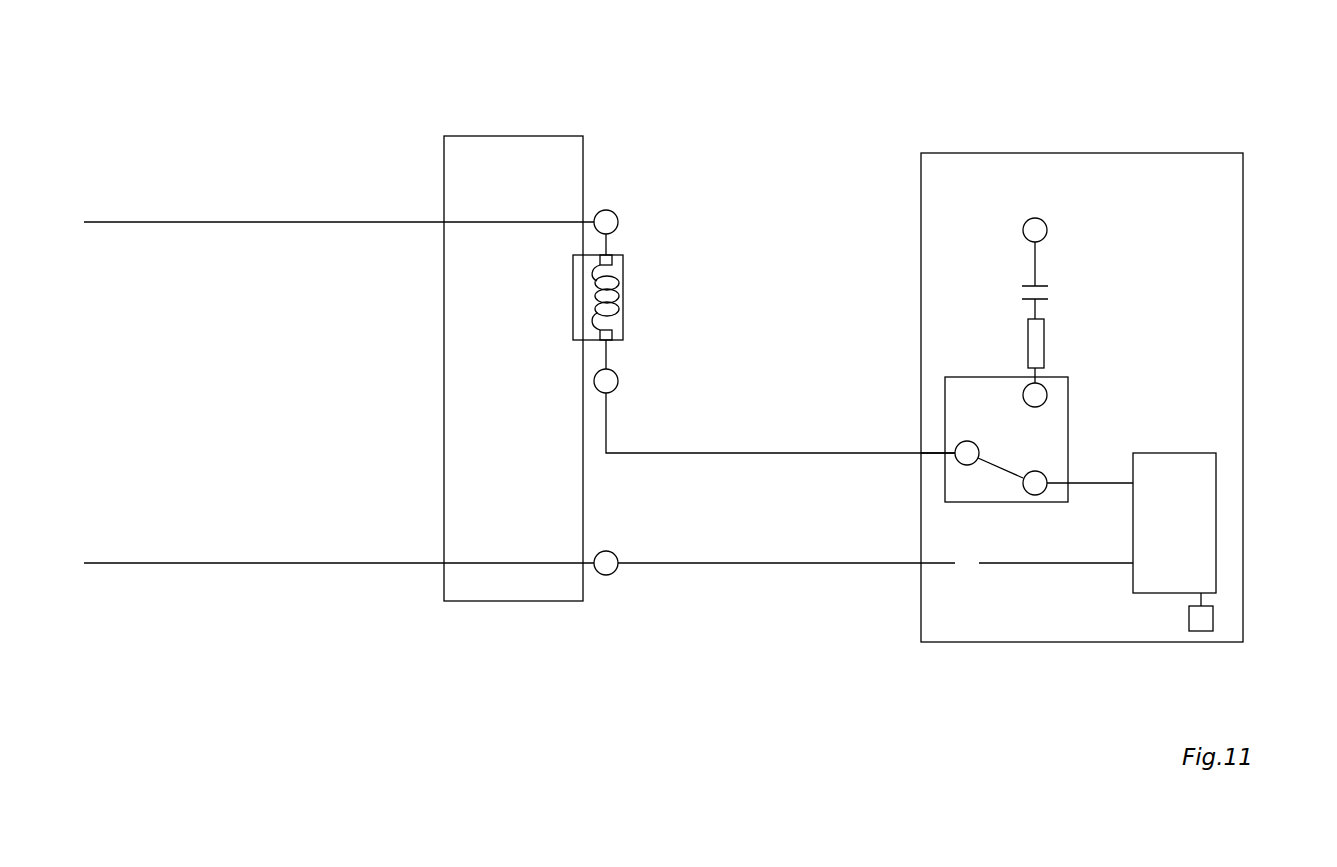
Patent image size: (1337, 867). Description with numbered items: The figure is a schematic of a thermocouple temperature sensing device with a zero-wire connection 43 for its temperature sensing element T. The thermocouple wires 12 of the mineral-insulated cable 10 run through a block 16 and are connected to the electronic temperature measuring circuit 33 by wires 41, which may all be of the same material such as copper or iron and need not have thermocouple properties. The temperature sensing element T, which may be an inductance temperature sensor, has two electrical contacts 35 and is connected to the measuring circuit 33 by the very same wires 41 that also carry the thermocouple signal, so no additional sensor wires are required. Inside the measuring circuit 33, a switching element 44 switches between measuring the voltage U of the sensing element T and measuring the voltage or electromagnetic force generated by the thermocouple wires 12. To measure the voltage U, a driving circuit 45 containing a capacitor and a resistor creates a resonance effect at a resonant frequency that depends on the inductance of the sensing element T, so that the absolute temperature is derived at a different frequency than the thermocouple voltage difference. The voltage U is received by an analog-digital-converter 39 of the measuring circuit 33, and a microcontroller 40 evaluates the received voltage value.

The mineral-insulated cable 10 is at (339, 134).
The thermocouple wires 12 is at (335, 222).
The switching unit 16 is at (524, 136).
The electronic temperature measuring circuit 33 is at (1128, 152).
The electrical contacts 35 is at (600, 260).
The temperature sensing element T is at (591, 301).
The analog-digital-converter 39 is at (1182, 453).
The microcontroller 40 is at (1201, 632).
The wires 41 is at (817, 453).
The zero-wire connection 43 is at (762, 223).
The switching element 44 is at (1069, 393).
The driving circuit 45 is at (1072, 288).
The voltage U is at (908, 458).